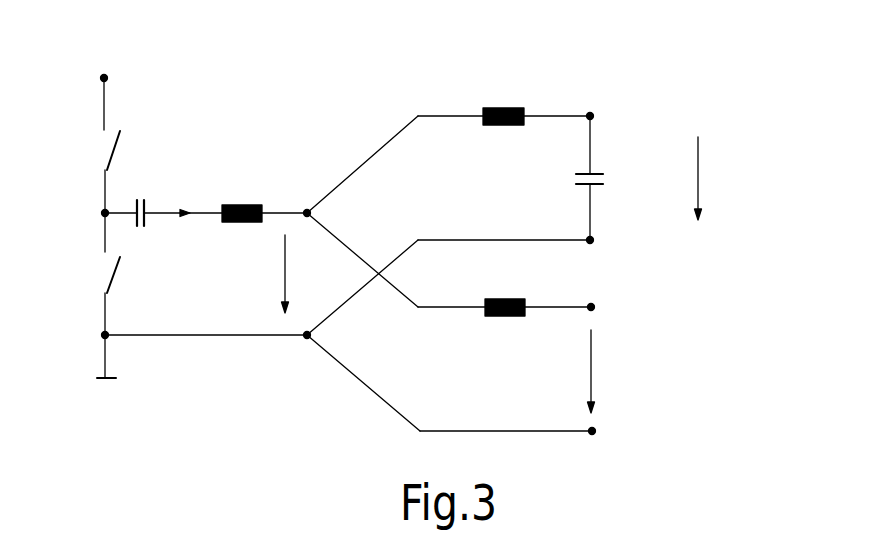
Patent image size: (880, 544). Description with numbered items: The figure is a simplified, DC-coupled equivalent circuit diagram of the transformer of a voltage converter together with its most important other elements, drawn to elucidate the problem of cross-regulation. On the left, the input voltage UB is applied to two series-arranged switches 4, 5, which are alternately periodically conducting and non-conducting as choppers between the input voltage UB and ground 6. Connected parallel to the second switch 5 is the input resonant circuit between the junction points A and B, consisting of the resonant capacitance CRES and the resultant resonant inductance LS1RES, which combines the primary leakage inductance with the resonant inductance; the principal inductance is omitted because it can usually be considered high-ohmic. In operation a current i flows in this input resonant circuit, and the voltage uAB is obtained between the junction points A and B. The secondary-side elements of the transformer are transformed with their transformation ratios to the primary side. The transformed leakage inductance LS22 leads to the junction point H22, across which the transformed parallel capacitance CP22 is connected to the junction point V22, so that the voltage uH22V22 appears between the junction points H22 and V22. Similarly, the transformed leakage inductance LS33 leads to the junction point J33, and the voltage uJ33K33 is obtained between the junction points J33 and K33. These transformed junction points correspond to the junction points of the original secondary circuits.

The input voltage UB is at (101, 81).
The switch 4 is at (110, 150).
The resonant capacitance CRES is at (143, 205).
The current i is at (199, 230).
The resultant resonant inductance LS1RES is at (237, 203).
The junction point A is at (309, 230).
The junction point B is at (309, 313).
The voltage uAB is at (262, 274).
The switch 5 is at (108, 278).
The ground 6 is at (97, 378).
The transformed leakage inductance LS22 is at (504, 97).
The junction point H22 is at (617, 117).
The transformed parallel capacitance CP22 is at (618, 178).
The junction point V22 is at (532, 244).
The voltage uH22V22 is at (748, 178).
The transformed leakage inductance LS33 is at (504, 288).
The junction point J33 is at (618, 305).
The voltage uJ33K33 is at (643, 371).
The junction point K33 is at (535, 435).